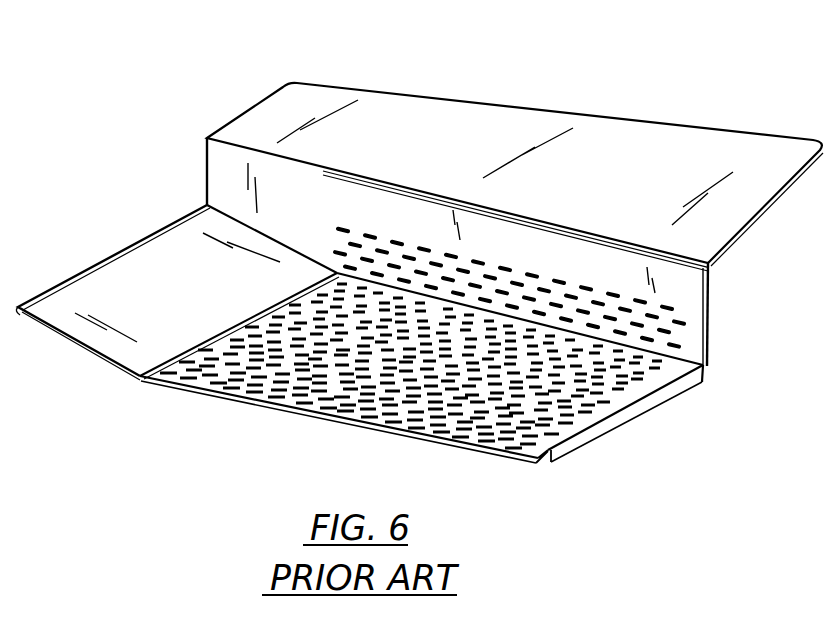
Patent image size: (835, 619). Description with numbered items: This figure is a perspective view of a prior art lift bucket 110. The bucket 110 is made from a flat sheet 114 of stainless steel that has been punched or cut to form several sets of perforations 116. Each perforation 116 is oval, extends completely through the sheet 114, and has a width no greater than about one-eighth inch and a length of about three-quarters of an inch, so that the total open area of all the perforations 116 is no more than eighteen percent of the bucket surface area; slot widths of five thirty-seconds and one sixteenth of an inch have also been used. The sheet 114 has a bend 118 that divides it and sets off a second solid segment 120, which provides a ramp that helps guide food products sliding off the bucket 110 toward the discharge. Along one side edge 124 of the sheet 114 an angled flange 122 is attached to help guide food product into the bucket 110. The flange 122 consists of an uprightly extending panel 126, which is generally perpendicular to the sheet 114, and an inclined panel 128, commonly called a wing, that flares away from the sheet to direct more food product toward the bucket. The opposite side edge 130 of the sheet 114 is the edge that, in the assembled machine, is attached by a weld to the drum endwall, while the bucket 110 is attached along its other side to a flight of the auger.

The lift bucket 110 is at (197, 193).
The flat sheet 114 is at (533, 464).
The perforations 116 is at (297, 389).
The bend 118 is at (141, 376).
The second solid segment 120 is at (102, 356).
The angled flange 122 is at (722, 285).
The side edge 124 is at (709, 370).
The uprightly extending panel 126 is at (217, 163).
The inclined panel 128 is at (318, 113).
The side edge 130 is at (388, 435).